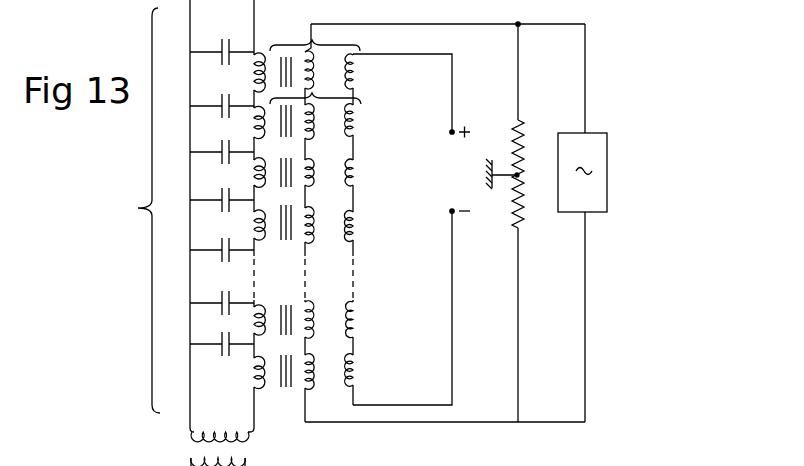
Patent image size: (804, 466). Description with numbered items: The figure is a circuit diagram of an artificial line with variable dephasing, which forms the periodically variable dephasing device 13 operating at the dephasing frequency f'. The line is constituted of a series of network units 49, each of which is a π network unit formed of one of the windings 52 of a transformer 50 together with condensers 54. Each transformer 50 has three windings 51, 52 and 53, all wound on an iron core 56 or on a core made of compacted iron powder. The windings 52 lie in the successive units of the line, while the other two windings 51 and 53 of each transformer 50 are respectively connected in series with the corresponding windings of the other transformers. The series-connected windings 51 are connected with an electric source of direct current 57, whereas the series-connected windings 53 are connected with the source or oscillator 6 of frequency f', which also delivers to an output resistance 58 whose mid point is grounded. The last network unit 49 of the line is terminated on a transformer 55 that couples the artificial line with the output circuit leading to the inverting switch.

The periodically variable dephasing device 13 is at (130, 210).
The network unit 49 is at (191, 326).
The transformer 50 is at (315, 62).
The winding 51 is at (365, 229).
The winding 52 is at (228, 221).
The winding 53 is at (323, 223).
The condenser 54 is at (222, 342).
The transformer 55 is at (234, 451).
The iron core 56 is at (282, 232).
The electric source of direct current 57 is at (411, 229).
The output resistance 58 is at (520, 222).
The oscillator 6 is at (593, 223).